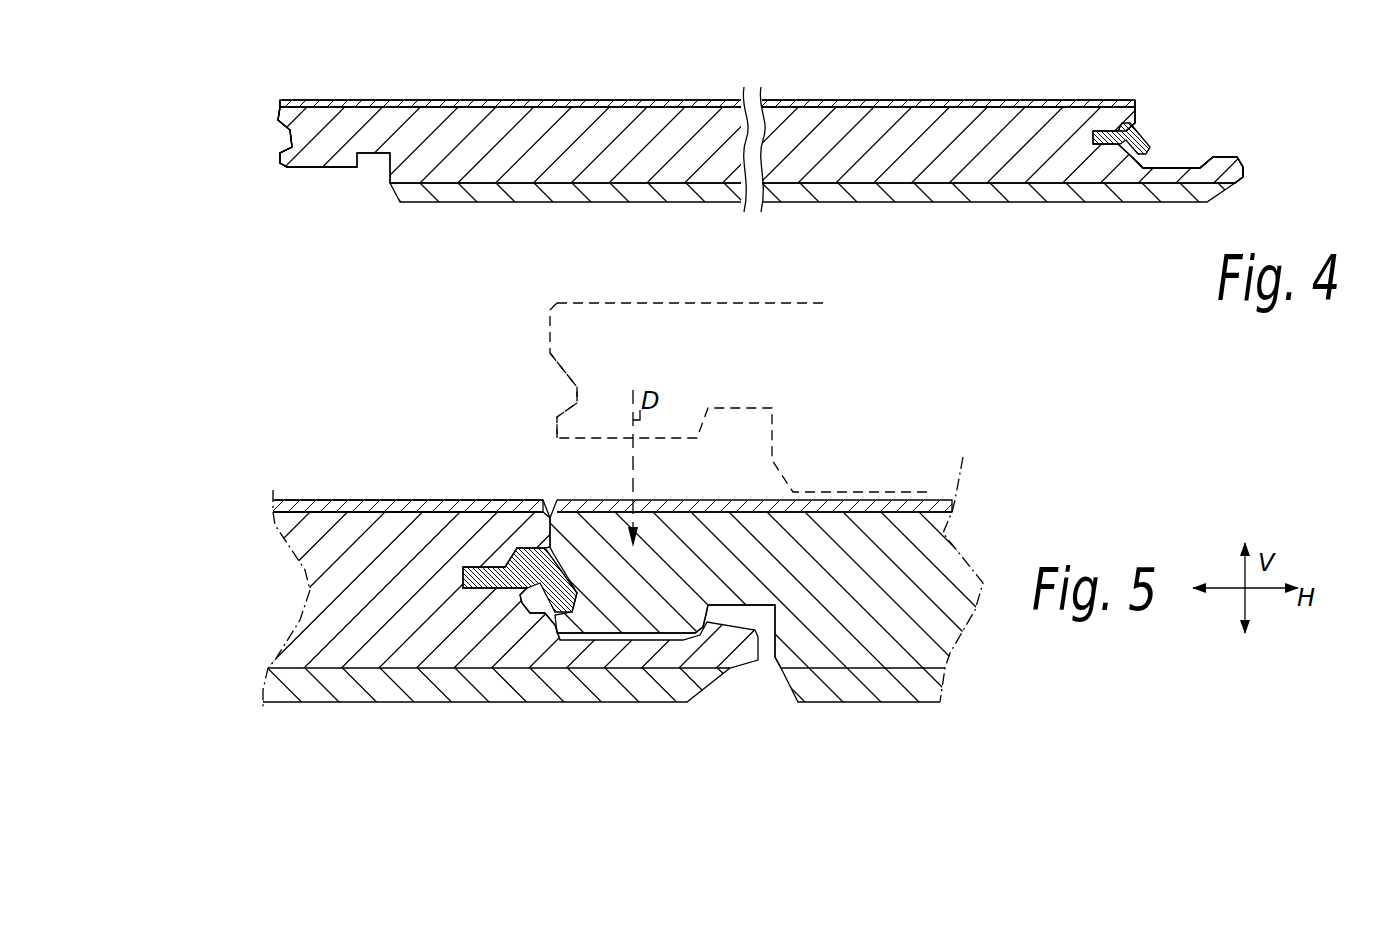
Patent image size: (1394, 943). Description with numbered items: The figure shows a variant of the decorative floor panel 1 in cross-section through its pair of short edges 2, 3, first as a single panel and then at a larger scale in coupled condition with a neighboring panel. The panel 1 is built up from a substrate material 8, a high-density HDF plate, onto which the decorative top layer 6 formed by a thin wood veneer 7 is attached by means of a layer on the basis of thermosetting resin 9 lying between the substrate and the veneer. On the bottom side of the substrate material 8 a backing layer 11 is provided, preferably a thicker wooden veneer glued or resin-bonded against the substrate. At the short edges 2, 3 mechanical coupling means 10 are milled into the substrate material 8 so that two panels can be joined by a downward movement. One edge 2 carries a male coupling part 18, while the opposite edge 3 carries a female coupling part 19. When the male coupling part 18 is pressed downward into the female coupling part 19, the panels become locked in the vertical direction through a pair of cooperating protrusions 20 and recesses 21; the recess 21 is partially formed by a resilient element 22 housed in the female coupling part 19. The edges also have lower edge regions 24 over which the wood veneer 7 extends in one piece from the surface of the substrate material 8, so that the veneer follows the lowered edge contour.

In FIG. 4, the floor panel 1 is at (731, 140).
In FIG. 5, the floor panel 1 is at (634, 573).
In FIG. 4, the short edge 2 is at (257, 157).
In FIG. 4, the short edge 3 is at (1205, 127).
In FIG. 4, the decorative top layer 6 is at (305, 100).
In FIG. 5, the decorative top layer 6 is at (365, 507).
In FIG. 4, the wood veneer 7 is at (707, 64).
In FIG. 5, the wood veneer 7 is at (612, 460).
In FIG. 4, the substrate material 8 is at (540, 157).
In FIG. 5, the substrate material 8 is at (333, 592).
In FIG. 4, the layer on the basis of thermosetting resin 9 is at (547, 101).
In FIG. 5, the layer on the basis of thermosetting resin 9 is at (452, 508).
In FIG. 4, the mechanical coupling means 10 is at (330, 183).
In FIG. 4, the backing layer 11 is at (788, 192).
In FIG. 5, the backing layer 11 is at (303, 693).
In FIG. 4, the male coupling part 18 is at (280, 120).
In FIG. 5, the male coupling part 18 is at (637, 597).
In FIG. 4, the female coupling part 19 is at (1180, 160).
In FIG. 4, the protrusion 20 is at (285, 162).
In FIG. 5, the protrusion 20 is at (562, 418).
In FIG. 4, the recess 21 is at (1143, 160).
In FIG. 5, the recess 21 is at (550, 613).
In FIG. 4, the resilient element 22 is at (1125, 153).
In FIG. 5, the resilient element 22 is at (520, 567).
In FIG. 4, the lower edge region 24 is at (282, 100).
In FIG. 5, the lower edge region 24 is at (553, 312).